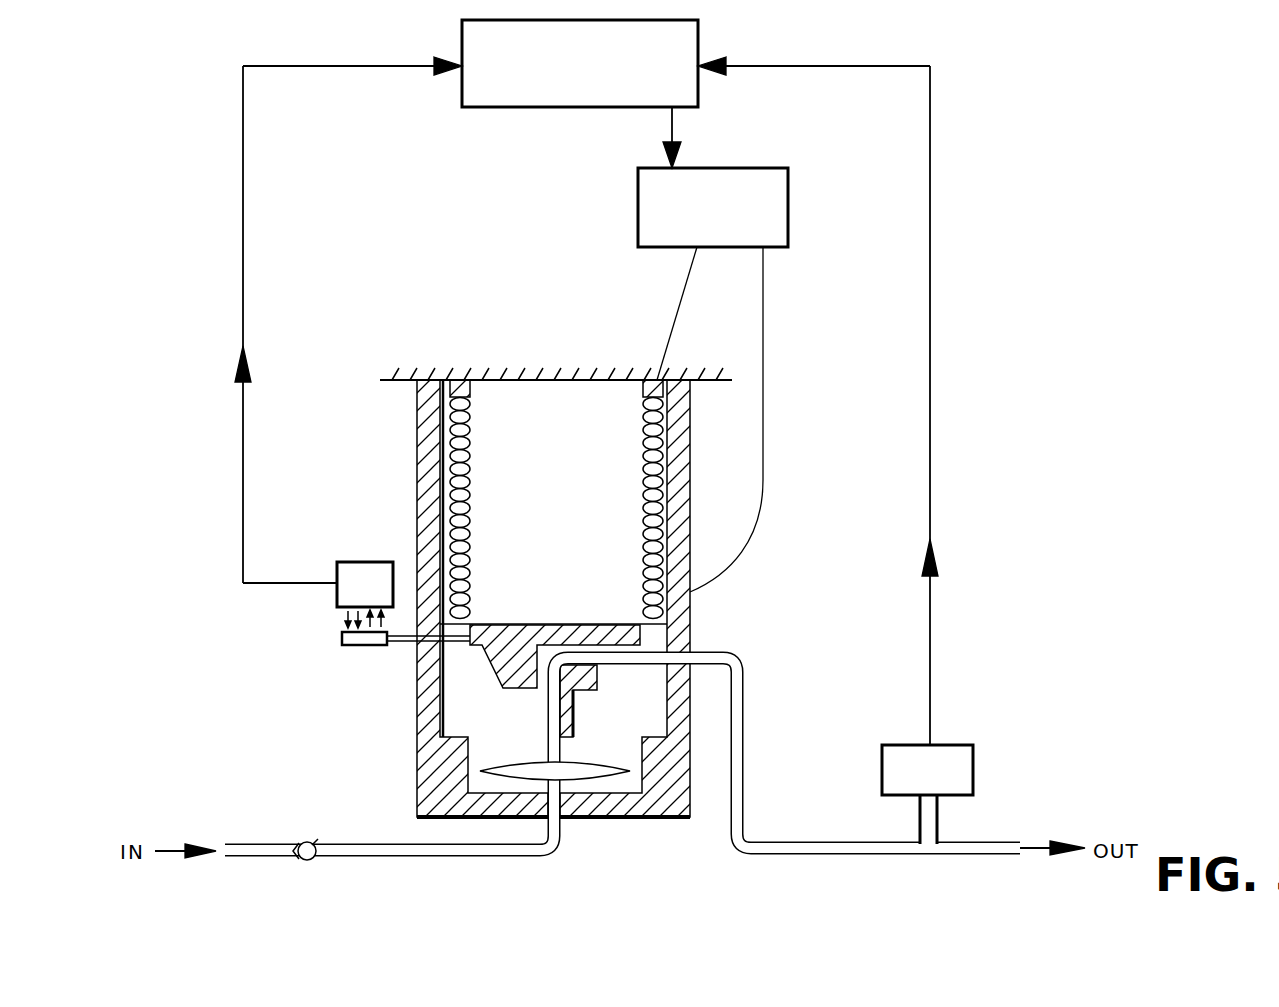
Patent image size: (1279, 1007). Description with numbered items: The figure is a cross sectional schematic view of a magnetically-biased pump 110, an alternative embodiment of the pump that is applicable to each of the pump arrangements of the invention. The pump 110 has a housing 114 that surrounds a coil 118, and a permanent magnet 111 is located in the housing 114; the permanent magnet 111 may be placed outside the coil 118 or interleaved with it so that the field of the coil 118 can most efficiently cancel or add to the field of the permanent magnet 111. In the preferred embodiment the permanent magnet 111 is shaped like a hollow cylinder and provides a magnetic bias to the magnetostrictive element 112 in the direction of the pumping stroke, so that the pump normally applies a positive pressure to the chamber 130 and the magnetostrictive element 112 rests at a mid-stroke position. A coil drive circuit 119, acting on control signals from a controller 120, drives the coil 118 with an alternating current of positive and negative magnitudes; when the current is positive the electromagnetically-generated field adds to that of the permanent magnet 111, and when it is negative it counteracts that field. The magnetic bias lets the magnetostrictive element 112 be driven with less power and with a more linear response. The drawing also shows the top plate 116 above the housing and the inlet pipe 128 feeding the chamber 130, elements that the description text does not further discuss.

The pump 110 is at (515, 598).
The permanent magnet 111 is at (457, 437).
The magnetostrictive element 112 is at (538, 505).
The housing 114 is at (680, 505).
The top plate 116 is at (477, 378).
The coil 118 is at (657, 455).
The coil drive circuit 119 is at (640, 233).
The controller 120 is at (462, 90).
The inlet pipe 128 is at (580, 797).
The chamber 130 is at (642, 767).